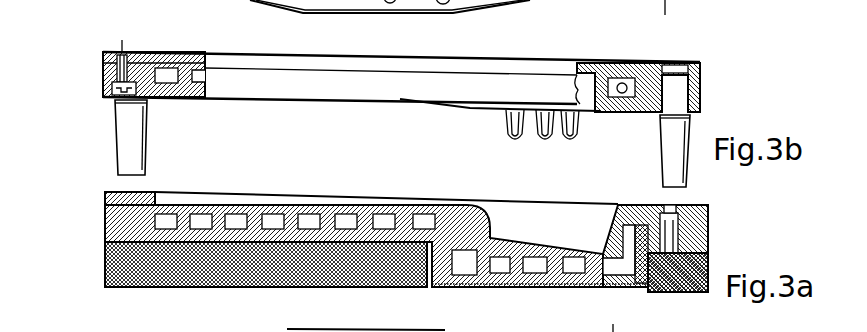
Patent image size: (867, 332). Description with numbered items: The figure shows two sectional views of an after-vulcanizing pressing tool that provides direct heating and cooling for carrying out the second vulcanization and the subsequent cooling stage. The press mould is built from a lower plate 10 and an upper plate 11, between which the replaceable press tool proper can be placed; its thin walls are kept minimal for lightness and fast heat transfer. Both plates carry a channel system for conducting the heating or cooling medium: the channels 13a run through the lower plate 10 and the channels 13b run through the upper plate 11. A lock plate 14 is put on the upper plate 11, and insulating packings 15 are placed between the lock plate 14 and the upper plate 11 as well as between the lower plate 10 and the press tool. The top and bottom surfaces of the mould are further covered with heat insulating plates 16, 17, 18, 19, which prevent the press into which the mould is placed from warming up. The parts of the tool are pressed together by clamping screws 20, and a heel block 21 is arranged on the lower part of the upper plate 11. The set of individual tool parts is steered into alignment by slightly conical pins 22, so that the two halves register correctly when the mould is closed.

In FIG. 3A, the lower plate 10 is at (527, 290).
In FIG. 3B, the upper plate 11 is at (165, 72).
In FIG. 3A, the channels 13a is at (162, 222).
In FIG. 3B, the channels 13b is at (166, 75).
In FIG. 3B, the lock plate 14 is at (560, 73).
In FIG. 3B, the packings 15 is at (703, 90).
In FIG. 3A, the packings 15 is at (634, 205).
In FIG. 3A, the heat insulating plate 16 is at (672, 293).
In FIG. 3A, the heat insulating plate 17 is at (625, 292).
In FIG. 3A, the heat insulating plate 18 is at (110, 266).
In FIG. 3B, the heat insulating plate 19 is at (668, 63).
In FIG. 3B, the clamping screws 20 is at (741, 191).
In FIG. 3B, the heel block 21 is at (466, 108).
In FIG. 3B, the conical pins 22 is at (683, 128).